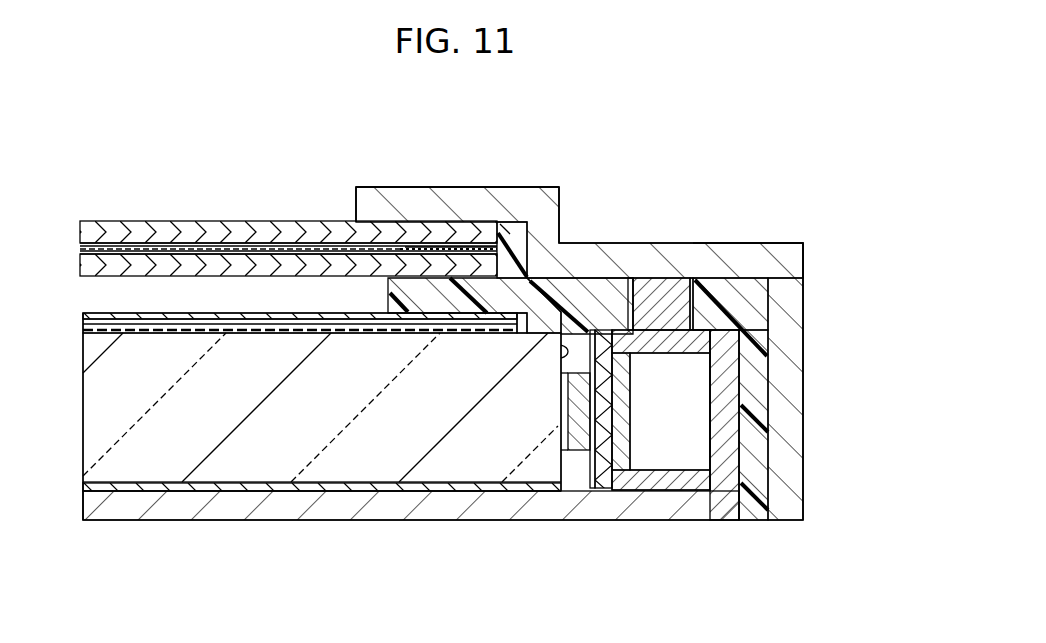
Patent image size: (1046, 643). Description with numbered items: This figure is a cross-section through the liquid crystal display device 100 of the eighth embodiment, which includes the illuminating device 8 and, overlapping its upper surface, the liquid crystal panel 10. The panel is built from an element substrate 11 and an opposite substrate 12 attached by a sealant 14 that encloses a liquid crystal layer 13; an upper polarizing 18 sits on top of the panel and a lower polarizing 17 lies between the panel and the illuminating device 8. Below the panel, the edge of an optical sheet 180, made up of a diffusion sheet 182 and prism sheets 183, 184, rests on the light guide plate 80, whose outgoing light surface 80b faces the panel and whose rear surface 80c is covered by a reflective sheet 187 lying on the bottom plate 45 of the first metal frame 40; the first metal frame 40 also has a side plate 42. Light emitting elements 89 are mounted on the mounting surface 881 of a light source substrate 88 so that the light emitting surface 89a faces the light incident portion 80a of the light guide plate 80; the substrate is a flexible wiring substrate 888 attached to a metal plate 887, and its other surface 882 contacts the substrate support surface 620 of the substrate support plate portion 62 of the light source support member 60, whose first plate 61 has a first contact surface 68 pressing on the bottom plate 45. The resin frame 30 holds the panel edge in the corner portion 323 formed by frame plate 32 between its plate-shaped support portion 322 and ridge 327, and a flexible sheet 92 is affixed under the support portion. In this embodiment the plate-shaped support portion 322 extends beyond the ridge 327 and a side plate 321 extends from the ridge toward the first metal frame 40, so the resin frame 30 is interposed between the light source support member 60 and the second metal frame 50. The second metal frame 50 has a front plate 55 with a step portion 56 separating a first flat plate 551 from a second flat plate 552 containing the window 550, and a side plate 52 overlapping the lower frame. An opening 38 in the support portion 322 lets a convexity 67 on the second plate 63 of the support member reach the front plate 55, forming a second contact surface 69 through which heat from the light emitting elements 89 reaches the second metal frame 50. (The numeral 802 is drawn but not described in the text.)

The liquid crystal display device 100 is at (566, 68).
The liquid crystal panel 10 is at (288, 156).
The element substrate 11 is at (255, 258).
The opposite substrate 12 is at (290, 240).
The liquid crystal layer 13 is at (320, 250).
The sealant 14 is at (438, 245).
The lower polarizing 17 is at (88, 270).
The upper polarizing 18 is at (88, 230).
The optical sheet 180 is at (305, 222).
The diffusion sheet 182 is at (215, 322).
The prism sheet 183 is at (185, 322).
The prism sheet 184 is at (147, 322).
The window 550 is at (358, 205).
The second flat plate 552 is at (410, 198).
The flexible sheet 92 is at (455, 265).
The corner portion 323 is at (497, 256).
The ridge 327 is at (512, 250).
The second metal frame 50 is at (554, 178).
The step portion 56 is at (550, 220).
The resin frame 30 is at (603, 241).
The frame plate 32 is at (585, 297).
The second contact surface 69 is at (652, 300).
The mounting surface 881 is at (631, 300).
The other surface 882 is at (692, 300).
The front plate 55 is at (730, 258).
The first flat plate 551 is at (772, 258).
The opening 38 is at (775, 285).
The convexity 67 is at (722, 340).
The second plate 63 is at (745, 374).
The side plate 52 is at (790, 414).
The side plate 42 is at (728, 447).
The side plate 321 is at (756, 484).
The outgoing light surface 80b is at (262, 325).
The plate-shaped support portion 322 is at (392, 300).
The side surface 802 is at (490, 412).
The light incident portion 80a is at (566, 358).
The substrate support surface 620 is at (604, 395).
The substrate support plate portion 62 is at (622, 430).
The illuminating device 8 is at (392, 368).
The light guide plate 80 is at (248, 460).
The rear surface 80c is at (145, 487).
The reflective sheet 187 is at (108, 488).
The first metal frame 40 is at (322, 558).
The bottom plate 45 is at (320, 500).
The light emitting element 89 is at (560, 432).
The light emitting surface 89a is at (556, 388).
The light source substrate 88 is at (570, 481).
The metal plate 887 is at (598, 494).
The flexible wiring substrate 888 is at (591, 494).
The first plate 61 is at (628, 497).
The light source support member 60 is at (678, 496).
The first contact surface 68 is at (716, 499).